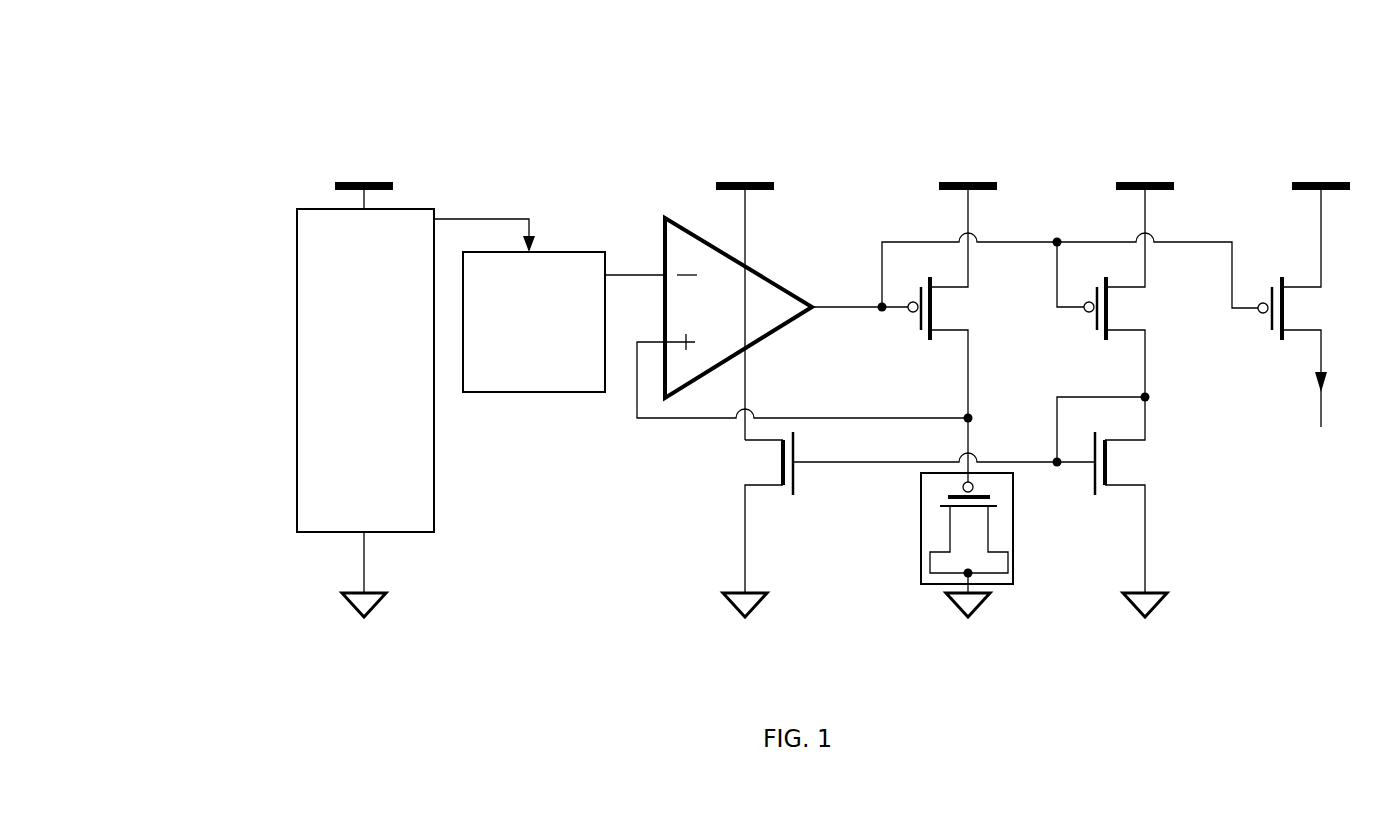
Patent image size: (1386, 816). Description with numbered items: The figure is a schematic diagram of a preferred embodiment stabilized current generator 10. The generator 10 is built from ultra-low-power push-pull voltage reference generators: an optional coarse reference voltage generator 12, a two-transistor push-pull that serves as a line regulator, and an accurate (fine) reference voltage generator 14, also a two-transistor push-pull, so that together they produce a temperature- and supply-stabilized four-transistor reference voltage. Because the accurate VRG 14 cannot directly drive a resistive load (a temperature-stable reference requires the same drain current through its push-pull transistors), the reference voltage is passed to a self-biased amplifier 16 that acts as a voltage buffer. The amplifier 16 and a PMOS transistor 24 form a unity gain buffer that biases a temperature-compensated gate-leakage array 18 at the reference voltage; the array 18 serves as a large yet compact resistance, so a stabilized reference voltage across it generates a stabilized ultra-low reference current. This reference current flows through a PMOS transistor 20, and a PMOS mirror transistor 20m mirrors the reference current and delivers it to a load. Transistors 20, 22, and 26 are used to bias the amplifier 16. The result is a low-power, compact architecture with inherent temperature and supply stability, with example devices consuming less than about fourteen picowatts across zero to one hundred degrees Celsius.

The stabilized current generator 10 is at (218, 130).
The coarse reference voltage generator 12 is at (266, 236).
The accurate reference voltage generator 14 is at (523, 392).
The self-biased amplifier 16 is at (698, 252).
The temperature-compensated gate-leakage array 18 is at (1007, 586).
The PMOS transistor 20 is at (1135, 315).
The PMOS mirror transistor 20m is at (1275, 262).
The transistor 22 is at (1135, 465).
The PMOS transistor 24 is at (952, 313).
The transistor 26 is at (728, 455).